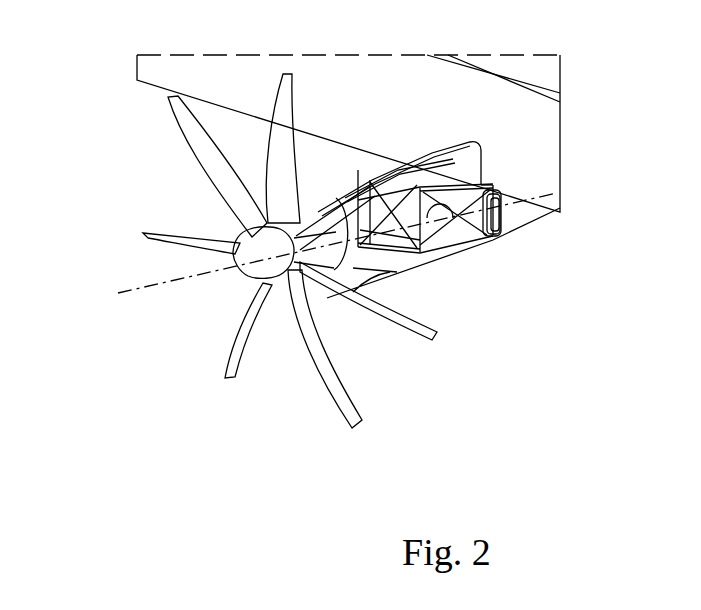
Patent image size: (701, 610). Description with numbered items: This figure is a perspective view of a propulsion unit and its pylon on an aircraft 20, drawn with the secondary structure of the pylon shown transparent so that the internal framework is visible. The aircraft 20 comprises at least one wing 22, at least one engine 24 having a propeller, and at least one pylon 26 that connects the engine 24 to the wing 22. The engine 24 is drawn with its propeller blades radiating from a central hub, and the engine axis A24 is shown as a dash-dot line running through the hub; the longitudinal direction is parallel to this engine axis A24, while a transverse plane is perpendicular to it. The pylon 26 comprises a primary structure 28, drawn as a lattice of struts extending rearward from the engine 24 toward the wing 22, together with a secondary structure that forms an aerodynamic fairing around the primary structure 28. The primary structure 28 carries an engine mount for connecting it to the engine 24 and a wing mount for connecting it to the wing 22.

The aircraft 20 is at (500, 74).
The wing 22 is at (543, 99).
The engine 24 is at (238, 277).
The engine axis A24 is at (147, 284).
The pylon 26 is at (457, 262).
The primary structure 28 is at (414, 259).